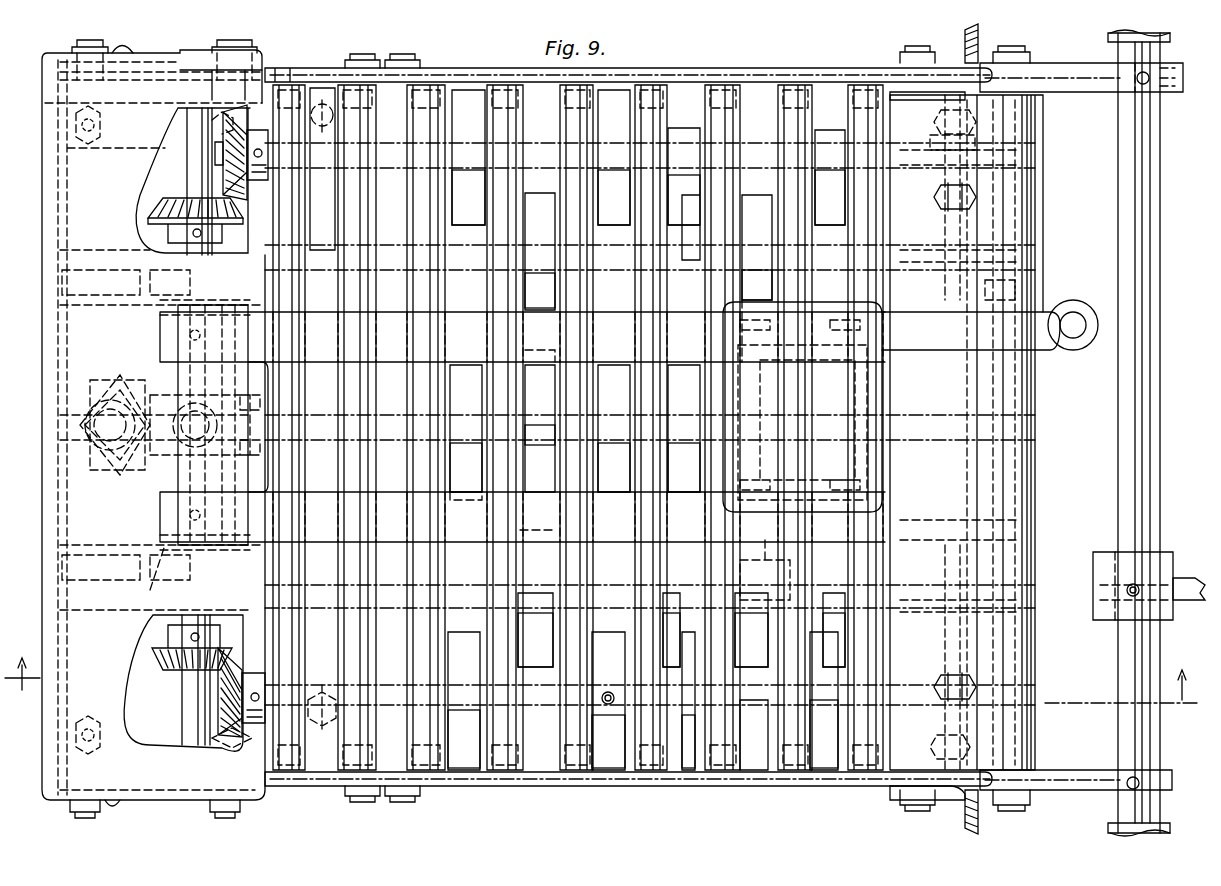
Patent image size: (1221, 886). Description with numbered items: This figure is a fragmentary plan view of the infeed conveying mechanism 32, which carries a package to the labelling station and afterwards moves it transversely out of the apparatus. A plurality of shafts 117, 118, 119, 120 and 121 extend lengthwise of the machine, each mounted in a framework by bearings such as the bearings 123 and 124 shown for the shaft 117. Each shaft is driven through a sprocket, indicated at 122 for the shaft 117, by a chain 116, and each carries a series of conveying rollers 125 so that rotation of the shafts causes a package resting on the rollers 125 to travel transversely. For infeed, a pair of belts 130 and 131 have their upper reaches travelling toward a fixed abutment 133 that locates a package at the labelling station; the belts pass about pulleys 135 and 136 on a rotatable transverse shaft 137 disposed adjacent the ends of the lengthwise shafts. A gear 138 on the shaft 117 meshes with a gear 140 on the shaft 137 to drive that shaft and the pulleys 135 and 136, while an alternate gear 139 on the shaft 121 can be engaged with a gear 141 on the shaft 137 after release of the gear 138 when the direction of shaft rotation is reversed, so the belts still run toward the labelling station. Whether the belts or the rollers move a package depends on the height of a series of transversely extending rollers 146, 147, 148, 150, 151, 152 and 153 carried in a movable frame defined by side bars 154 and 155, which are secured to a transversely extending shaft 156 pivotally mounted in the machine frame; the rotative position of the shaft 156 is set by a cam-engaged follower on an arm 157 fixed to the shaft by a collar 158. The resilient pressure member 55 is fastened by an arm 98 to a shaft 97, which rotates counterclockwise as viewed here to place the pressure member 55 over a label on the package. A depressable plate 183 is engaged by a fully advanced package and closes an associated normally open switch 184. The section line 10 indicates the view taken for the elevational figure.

The section line 10- 10 is at (601, 706).
The conveying mechanism 32 is at (672, 796).
The pressure member 55 is at (760, 512).
The shaft 97 is at (1075, 338).
The arm 98 is at (1025, 305).
The chain 116 is at (1025, 672).
The shaft 117 is at (750, 710).
The shaft 118 is at (605, 600).
The shaft 119 is at (540, 435).
The shaft 120 is at (615, 270).
The shaft 121 is at (540, 170).
The sprocket 122 is at (1043, 118).
The bearing 123 is at (322, 140).
The bearing 124 is at (945, 140).
The conveying rollers 125 is at (470, 210).
The belt 130 is at (485, 532).
The belt 131 is at (485, 342).
The fixed abutment 133 is at (900, 745).
The pulley 135 is at (145, 574).
The pulley 136 is at (157, 300).
The shaft 137 is at (188, 693).
The gear 138 is at (222, 698).
The gear 139 is at (222, 185).
The gear 140 is at (152, 657).
The gear 141 is at (163, 217).
The roller 146 is at (290, 290).
The roller 147 is at (357, 285).
The roller 148 is at (430, 290).
The roller 150 is at (568, 290).
The roller 151 is at (715, 300).
The roller 152 is at (792, 290).
The roller 153 is at (866, 290).
The side bar 154 is at (705, 70).
The side bar 155 is at (598, 790).
The shaft 156 is at (1140, 422).
The arm 157 is at (1190, 600).
The collar 158 is at (1170, 552).
The plate 183 is at (270, 385).
The switch 184 is at (155, 445).